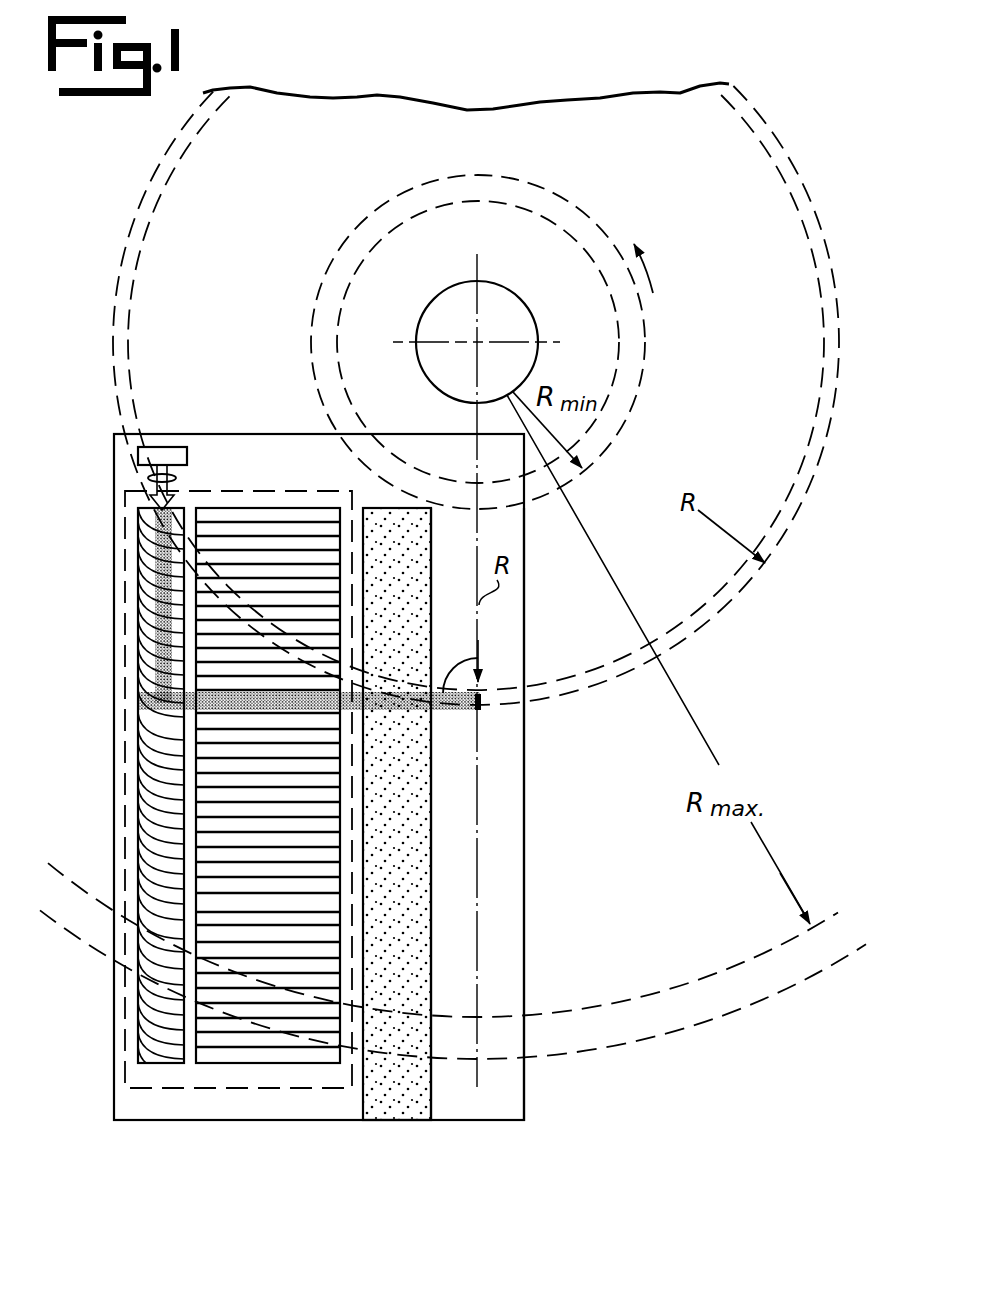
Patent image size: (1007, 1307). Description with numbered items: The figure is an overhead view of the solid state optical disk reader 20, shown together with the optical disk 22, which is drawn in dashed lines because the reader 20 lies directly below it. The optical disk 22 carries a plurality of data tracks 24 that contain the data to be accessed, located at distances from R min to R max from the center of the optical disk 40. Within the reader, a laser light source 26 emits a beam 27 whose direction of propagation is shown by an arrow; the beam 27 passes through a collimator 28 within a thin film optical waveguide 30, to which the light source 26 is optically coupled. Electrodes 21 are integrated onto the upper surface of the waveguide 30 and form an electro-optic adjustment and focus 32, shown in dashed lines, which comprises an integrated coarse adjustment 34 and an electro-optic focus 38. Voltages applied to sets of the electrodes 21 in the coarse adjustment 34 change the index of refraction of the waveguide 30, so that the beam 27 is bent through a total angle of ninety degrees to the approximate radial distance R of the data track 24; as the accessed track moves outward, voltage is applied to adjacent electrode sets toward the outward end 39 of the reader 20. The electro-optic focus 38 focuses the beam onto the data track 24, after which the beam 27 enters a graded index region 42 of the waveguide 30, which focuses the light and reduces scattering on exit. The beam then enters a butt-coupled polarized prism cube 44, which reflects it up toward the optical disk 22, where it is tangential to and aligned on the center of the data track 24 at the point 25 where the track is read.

The solid state optical disk reader 20 is at (228, 1125).
The electrodes 21 is at (232, 813).
The optical disk 22 is at (769, 1003).
The data tracks 24 is at (722, 606).
The point 25 is at (481, 688).
The laser light source 26 is at (155, 447).
The beam 27 is at (170, 487).
The collimator 28 is at (148, 478).
The thin film optical waveguide 30 is at (123, 1096).
The electro-optic adjustment and focus 32 is at (296, 491).
The integrated coarse adjustment 34 is at (163, 1065).
The electro-optic focus 38 is at (292, 1065).
The outward end 39 is at (178, 1121).
The center of the optical disk 40 is at (478, 340).
The graded index region 42 is at (383, 1112).
The butt-coupled polarized prism cube 44 is at (492, 1114).